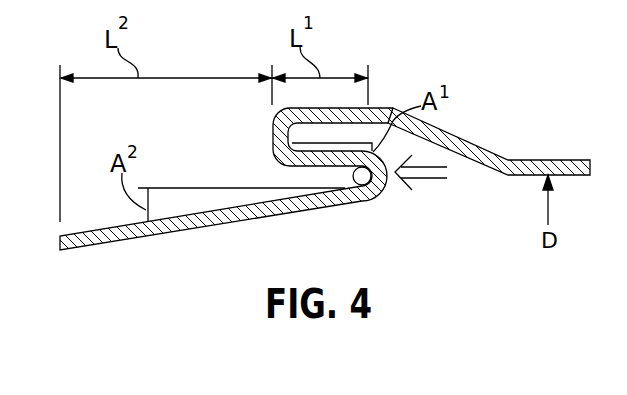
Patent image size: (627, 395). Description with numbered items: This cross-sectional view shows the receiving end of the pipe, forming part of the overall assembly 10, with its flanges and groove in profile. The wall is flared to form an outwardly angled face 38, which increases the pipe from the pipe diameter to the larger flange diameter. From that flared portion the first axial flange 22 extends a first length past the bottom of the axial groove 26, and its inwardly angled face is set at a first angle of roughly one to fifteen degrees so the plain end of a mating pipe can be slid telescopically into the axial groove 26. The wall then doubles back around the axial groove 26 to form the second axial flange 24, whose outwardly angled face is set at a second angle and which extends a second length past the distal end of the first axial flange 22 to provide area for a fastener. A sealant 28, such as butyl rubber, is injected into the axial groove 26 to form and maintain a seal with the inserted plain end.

The weather strip / sealing assembly 10 is at (60, 394).
The first axial flange 22 is at (272, 136).
The second axial flange 24 is at (120, 243).
The axial groove 26 is at (364, 179).
The sealant 28 is at (376, 198).
The outwardly angled face 38 is at (463, 138).